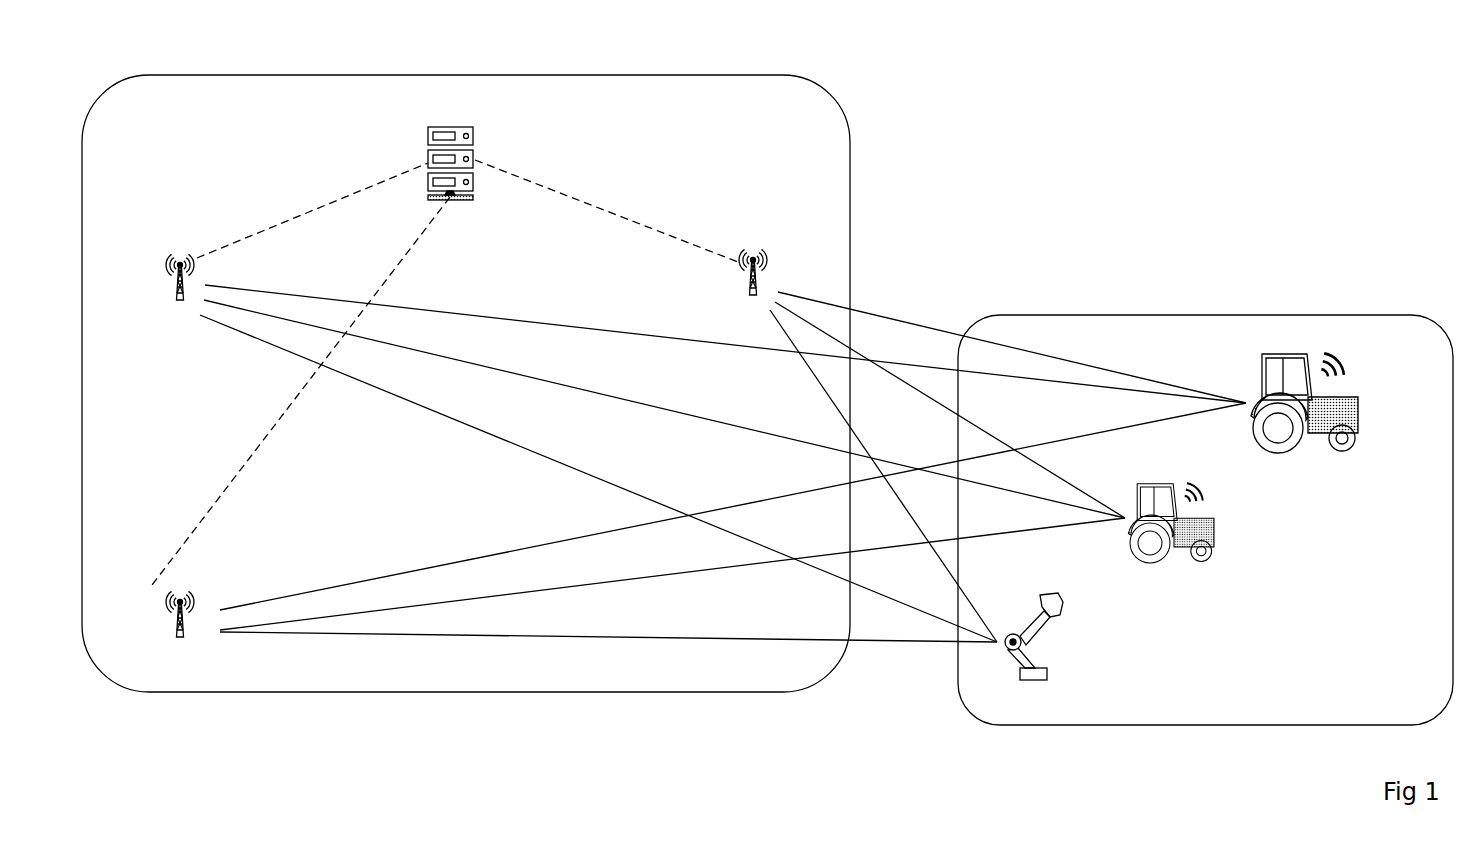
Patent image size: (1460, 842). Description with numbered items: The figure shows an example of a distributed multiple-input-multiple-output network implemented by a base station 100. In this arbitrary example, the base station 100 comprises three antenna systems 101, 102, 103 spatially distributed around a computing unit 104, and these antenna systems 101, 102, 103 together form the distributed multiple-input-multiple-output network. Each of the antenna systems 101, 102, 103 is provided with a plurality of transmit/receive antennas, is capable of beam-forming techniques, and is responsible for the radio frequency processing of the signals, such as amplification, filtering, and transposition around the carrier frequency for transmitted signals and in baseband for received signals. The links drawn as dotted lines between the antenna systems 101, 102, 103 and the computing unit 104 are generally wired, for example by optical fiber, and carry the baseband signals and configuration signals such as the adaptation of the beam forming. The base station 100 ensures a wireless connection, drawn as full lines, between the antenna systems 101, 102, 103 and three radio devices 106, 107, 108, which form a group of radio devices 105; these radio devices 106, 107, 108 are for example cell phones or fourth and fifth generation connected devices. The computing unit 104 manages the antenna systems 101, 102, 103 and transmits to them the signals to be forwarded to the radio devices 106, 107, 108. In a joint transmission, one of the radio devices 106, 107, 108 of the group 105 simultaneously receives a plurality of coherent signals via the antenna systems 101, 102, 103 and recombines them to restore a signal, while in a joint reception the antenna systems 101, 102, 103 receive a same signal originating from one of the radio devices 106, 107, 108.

The base station 100 is at (722, 75).
The antenna system 101 is at (180, 257).
The antenna system 102 is at (178, 595).
The antenna system 103 is at (762, 252).
The computing unit 104 is at (475, 152).
The group of radio devices 105 is at (978, 713).
The radio device 106 is at (1047, 672).
The radio device 107 is at (1214, 532).
The radio device 108 is at (1358, 406).